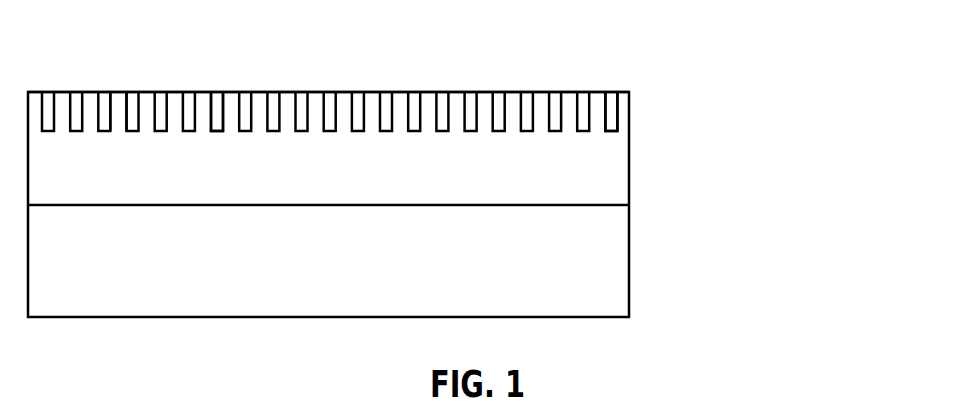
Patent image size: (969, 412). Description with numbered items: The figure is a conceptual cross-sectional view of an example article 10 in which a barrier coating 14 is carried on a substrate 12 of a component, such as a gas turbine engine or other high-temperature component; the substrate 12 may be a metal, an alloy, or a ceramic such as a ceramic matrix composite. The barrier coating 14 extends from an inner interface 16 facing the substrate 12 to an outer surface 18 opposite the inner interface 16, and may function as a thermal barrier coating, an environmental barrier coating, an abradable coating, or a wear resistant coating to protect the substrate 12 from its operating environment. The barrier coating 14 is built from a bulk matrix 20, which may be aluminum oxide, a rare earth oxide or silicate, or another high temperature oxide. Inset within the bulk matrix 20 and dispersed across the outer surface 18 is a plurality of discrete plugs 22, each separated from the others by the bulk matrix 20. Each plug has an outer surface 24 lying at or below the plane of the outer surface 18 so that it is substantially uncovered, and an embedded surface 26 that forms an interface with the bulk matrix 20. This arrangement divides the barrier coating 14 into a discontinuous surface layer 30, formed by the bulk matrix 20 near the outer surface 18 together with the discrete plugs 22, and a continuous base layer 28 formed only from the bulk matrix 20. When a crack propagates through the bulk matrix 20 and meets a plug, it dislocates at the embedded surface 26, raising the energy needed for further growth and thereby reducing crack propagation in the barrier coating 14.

The article 10 is at (752, 39).
The substrate 12 is at (647, 205).
The barrier coating 14 is at (722, 91).
The inner interface 16 is at (487, 204).
The outer surface 18 is at (310, 91).
The bulk matrix 20 is at (488, 91).
The plurality of discrete plugs 22 is at (612, 91).
The outer surface of plug 24 is at (217, 91).
The embedded surface 26 is at (117, 104).
The continuous base layer 28 is at (647, 130).
The discontinuous surface layer 30 is at (647, 91).